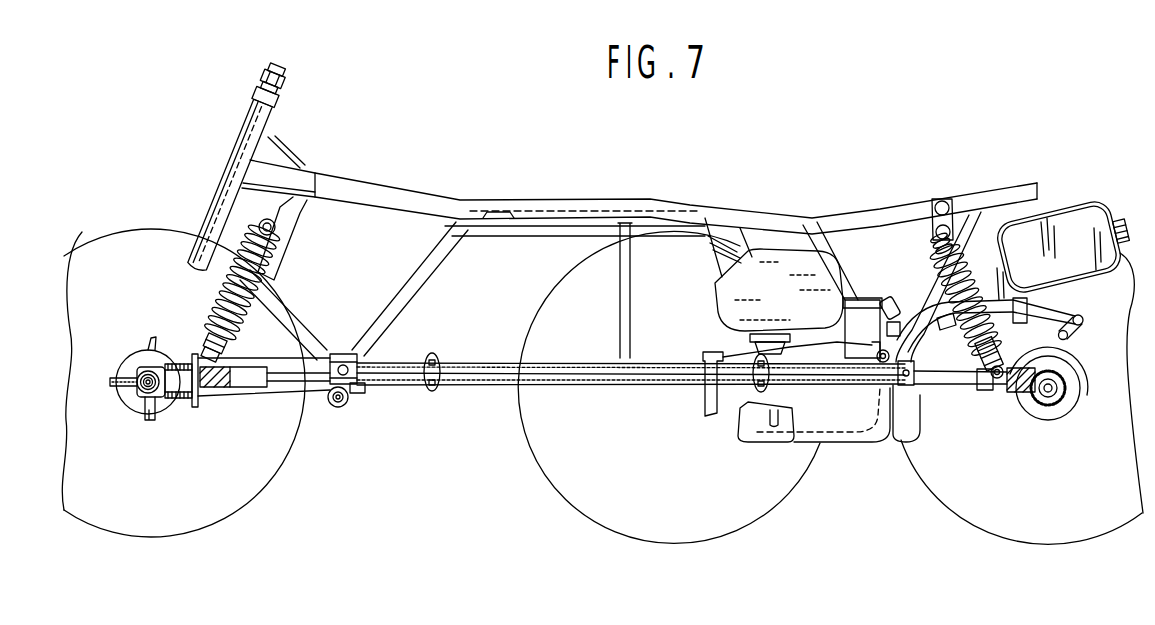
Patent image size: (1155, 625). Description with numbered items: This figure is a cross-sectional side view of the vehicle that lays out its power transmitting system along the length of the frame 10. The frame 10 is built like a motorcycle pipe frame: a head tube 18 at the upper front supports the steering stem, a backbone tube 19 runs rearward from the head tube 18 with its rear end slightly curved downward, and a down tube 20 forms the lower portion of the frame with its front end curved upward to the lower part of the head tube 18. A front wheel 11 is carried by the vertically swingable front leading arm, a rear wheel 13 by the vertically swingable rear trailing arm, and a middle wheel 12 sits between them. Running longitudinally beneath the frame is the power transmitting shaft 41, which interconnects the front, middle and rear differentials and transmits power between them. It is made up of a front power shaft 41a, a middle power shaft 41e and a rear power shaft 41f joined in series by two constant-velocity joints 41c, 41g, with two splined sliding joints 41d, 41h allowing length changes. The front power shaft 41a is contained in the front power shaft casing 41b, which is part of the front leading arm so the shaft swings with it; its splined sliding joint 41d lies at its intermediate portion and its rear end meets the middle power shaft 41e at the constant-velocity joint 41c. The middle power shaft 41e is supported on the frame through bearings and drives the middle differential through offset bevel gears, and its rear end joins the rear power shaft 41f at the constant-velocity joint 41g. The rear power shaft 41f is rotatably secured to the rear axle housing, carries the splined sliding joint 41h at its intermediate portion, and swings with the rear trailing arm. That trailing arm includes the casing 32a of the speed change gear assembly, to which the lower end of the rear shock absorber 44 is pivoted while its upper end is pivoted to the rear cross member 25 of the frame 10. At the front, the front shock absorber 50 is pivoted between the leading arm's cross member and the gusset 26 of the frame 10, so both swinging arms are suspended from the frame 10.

The frame 10 is at (652, 188).
The front wheels 11 is at (268, 484).
The middle wheel 12 is at (772, 502).
The rear wheels 13 is at (957, 502).
The head tube 18 is at (217, 192).
The backbone tube 19 is at (422, 195).
The down tube 20 is at (308, 338).
The rear cross member 25 is at (953, 200).
The gusset 26 is at (282, 208).
The casing of the speed change gear assembly 32a is at (1073, 349).
The power transmitting shaft 41 is at (468, 396).
The front power shaft 41a is at (283, 375).
The front power shaft casing 41b is at (260, 388).
The constant-velocity joint 41c is at (341, 353).
The splined sliding joint 41d is at (228, 386).
The middle power shaft 41e is at (574, 386).
The rear power shaft 41f is at (1021, 393).
The constant-velocity joint 41g is at (912, 390).
The splined sliding joint 41h is at (981, 386).
The rear shock absorber 44 is at (965, 260).
The front shock absorber 50 is at (222, 297).